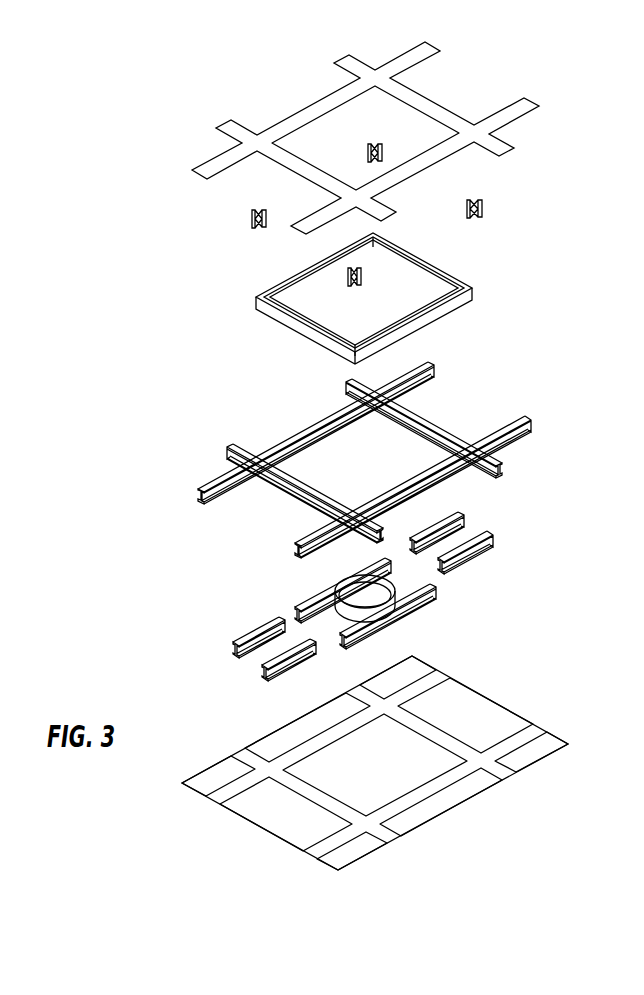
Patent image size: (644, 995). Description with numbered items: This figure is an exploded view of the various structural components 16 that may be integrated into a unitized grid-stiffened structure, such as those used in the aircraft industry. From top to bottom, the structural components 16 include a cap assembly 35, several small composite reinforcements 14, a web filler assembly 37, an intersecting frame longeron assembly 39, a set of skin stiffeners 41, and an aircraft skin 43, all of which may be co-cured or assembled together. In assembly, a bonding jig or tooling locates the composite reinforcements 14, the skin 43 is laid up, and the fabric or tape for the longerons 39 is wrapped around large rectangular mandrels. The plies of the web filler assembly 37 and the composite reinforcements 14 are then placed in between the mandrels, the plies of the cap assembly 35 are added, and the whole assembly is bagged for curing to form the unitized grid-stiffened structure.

The structural components 16 is at (207, 368).
The composite reinforcements 14 is at (484, 209).
The cap assembly 35 is at (535, 100).
The web filler assembly 37 is at (476, 298).
The intersecting frame longeron assembly 39 is at (536, 423).
The skin stiffeners 41 is at (493, 547).
The aircraft skin 43 is at (537, 730).